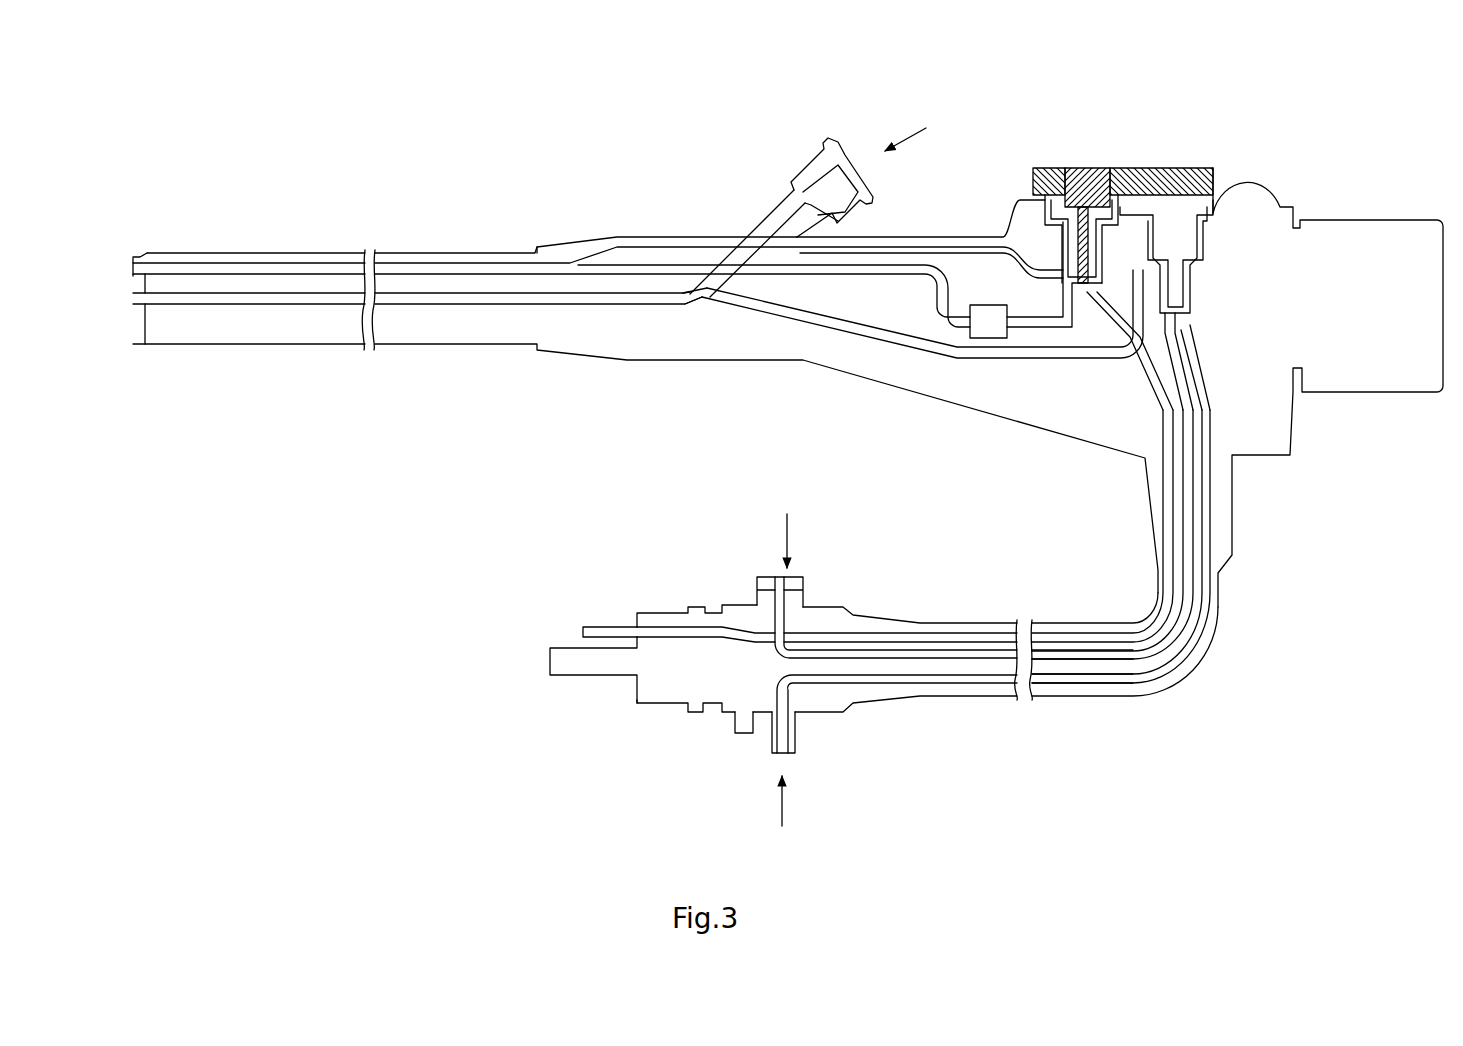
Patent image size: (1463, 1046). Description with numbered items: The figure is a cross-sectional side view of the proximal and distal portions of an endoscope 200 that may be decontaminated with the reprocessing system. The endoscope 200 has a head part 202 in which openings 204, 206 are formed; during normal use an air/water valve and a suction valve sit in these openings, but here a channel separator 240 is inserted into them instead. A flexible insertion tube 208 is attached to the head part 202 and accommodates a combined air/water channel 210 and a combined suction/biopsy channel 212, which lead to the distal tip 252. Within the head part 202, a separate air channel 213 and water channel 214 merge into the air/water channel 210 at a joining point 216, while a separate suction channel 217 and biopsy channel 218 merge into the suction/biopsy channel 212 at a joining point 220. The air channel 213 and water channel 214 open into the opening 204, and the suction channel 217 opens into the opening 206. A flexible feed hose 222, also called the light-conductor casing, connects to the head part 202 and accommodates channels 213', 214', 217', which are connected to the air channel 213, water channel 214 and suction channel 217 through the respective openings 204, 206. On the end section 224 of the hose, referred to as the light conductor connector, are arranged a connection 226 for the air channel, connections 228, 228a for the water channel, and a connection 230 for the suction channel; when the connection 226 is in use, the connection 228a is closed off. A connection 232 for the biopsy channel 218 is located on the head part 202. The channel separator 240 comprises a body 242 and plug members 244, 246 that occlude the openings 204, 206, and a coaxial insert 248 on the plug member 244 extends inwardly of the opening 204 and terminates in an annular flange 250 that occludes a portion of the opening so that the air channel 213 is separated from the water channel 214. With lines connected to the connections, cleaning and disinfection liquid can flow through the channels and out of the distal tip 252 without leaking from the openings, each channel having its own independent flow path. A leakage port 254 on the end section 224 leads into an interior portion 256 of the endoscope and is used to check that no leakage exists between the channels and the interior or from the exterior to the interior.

The endoscope 200 is at (976, 104).
The head part 202 is at (1297, 205).
The opening 204 is at (1070, 247).
The opening 206 is at (1178, 247).
The flexible insertion tube 208 is at (293, 248).
The combined air/water channel 210 is at (173, 262).
The combined suction/biopsy channel 212 is at (270, 296).
The air channel 213 is at (930, 222).
The air channel 213' is at (1093, 613).
The water channel 214 is at (774, 330).
The water channel 214' is at (900, 592).
The joining point 216 is at (567, 262).
The suction channel 217 is at (922, 345).
The suction channel 217' is at (1100, 716).
The biopsy channel 218 is at (777, 230).
The joining point 220 is at (690, 287).
The flexible feed hose 222 is at (1190, 684).
The end section 224 is at (636, 705).
The connection 226 is at (797, 582).
The connection 228 is at (613, 630).
The connection 228a is at (757, 583).
The connection 230 is at (775, 752).
The connection 232 is at (848, 150).
The channel separator 240 is at (1188, 98).
The body 242 is at (1112, 175).
The plug member 244 is at (1055, 175).
The plug member 246 is at (1198, 175).
The coaxial insert 248 is at (1100, 248).
The annular flange 250 is at (1083, 287).
The distal tip 252 is at (133, 353).
The leakage port 254 is at (745, 727).
The interior portion 256 is at (690, 693).